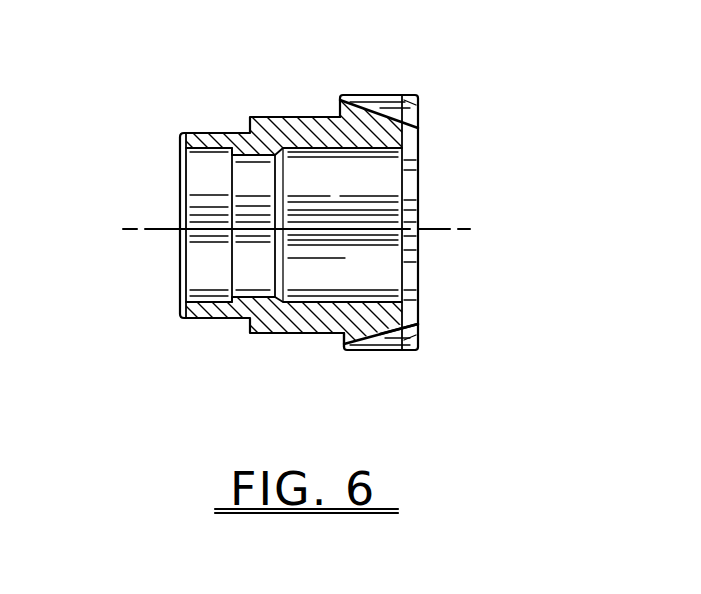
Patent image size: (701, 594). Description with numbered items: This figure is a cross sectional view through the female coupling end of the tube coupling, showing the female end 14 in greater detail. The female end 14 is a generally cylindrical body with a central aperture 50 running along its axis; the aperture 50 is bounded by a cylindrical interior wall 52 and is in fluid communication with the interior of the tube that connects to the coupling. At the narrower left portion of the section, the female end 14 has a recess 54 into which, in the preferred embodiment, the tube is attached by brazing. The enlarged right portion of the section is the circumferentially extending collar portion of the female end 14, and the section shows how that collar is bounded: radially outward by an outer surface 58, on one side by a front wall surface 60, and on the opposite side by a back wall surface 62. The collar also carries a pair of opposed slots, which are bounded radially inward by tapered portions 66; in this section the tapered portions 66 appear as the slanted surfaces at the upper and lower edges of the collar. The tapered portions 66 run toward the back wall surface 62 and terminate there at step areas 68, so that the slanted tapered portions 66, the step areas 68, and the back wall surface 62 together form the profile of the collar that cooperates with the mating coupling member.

The female end 14 is at (140, 384).
The aperture 50 is at (372, 265).
The cylindrical interior wall 52 is at (362, 150).
The recess 54 is at (212, 153).
The outer surface 58 is at (403, 352).
The front wall surface 60 is at (418, 318).
The back wall surface 62 is at (345, 343).
The tapered portions 66 is at (372, 353).
The step areas 68 is at (338, 113).